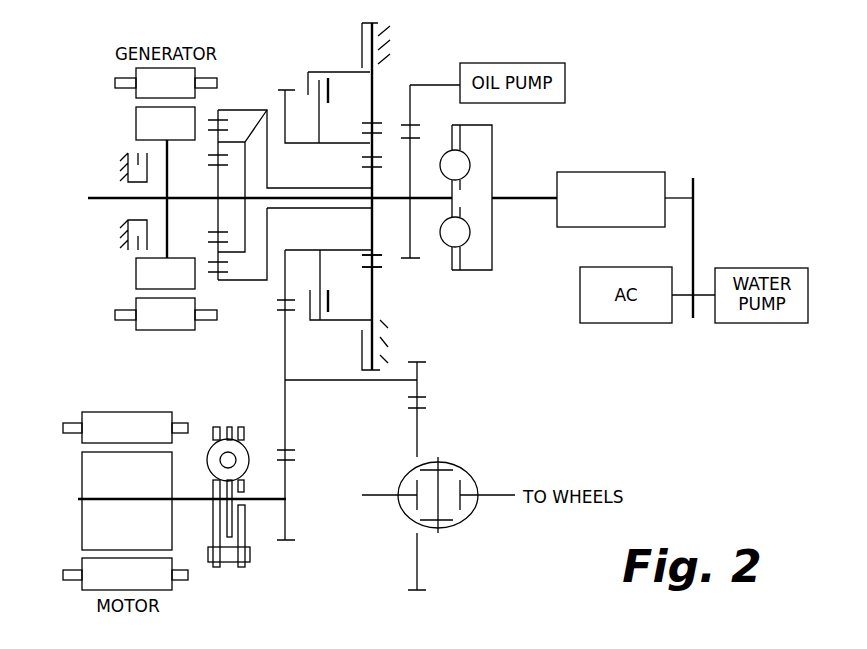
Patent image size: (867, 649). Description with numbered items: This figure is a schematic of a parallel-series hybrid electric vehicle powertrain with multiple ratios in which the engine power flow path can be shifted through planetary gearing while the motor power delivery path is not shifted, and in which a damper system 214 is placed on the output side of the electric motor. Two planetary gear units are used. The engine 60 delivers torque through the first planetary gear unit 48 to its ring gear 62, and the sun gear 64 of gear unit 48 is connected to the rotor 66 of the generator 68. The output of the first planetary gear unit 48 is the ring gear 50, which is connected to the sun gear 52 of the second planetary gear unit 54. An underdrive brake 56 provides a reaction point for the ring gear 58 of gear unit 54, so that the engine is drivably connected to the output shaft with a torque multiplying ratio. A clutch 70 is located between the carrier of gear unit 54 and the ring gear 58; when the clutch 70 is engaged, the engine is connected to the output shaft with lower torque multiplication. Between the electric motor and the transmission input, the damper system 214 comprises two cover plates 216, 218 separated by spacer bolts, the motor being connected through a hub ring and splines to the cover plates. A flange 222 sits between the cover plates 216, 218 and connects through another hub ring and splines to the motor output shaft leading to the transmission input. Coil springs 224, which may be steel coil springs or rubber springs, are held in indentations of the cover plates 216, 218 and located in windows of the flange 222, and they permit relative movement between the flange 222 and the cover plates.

The first planetary gear unit 48 is at (250, 108).
The ring gear 50 is at (250, 133).
The sun gear 52 is at (372, 183).
The second planetary gear unit 54 is at (383, 118).
The underdrive brake 56 is at (382, 339).
The ring gear 58 is at (373, 280).
The engine 60 is at (277, 192).
The ring gear 62 is at (223, 110).
The sun gear 64 is at (217, 213).
The rotor 66 is at (148, 122).
The generator 68 is at (148, 90).
The clutch 70 is at (312, 310).
The damper system 214 is at (230, 566).
The cover plate 216 is at (267, 520).
The cover plate 218 is at (215, 542).
The flange 222 is at (228, 537).
The coil springs 224 is at (208, 460).